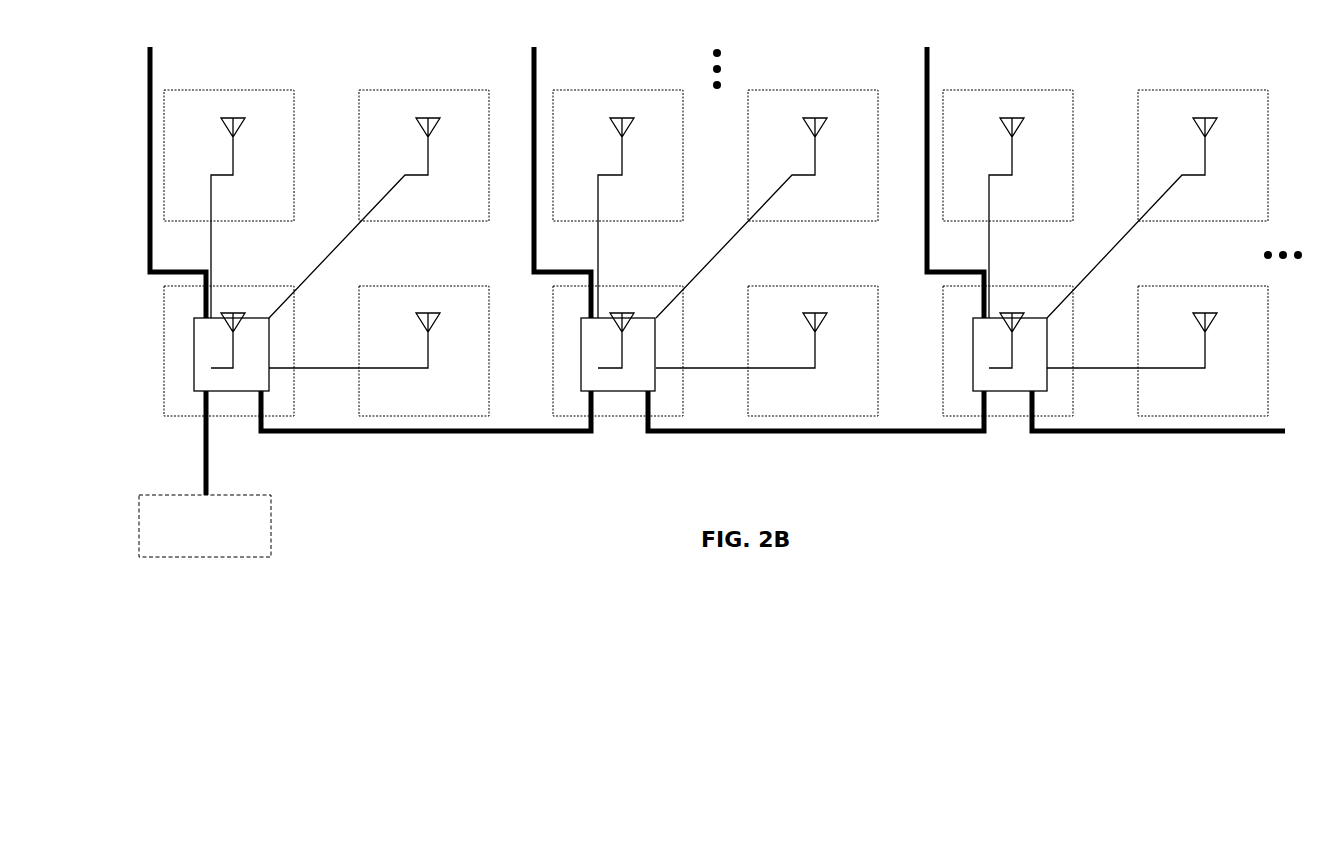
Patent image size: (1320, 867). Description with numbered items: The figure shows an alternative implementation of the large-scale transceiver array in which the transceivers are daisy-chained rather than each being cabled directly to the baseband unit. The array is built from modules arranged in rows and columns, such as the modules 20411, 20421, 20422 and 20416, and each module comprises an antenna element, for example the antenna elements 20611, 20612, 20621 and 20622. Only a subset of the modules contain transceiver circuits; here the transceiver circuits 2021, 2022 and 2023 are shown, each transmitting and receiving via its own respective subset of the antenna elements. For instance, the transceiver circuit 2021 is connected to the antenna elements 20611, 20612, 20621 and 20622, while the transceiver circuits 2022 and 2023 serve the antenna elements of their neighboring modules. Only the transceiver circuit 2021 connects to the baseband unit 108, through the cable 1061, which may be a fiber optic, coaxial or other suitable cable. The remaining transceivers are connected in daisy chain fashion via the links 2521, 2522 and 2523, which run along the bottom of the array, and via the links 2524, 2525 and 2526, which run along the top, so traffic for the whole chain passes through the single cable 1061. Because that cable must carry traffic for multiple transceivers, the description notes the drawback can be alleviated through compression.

The module 20421 is at (215, 90).
The antenna element 20621 is at (258, 111).
The module 20422 is at (389, 89).
The antenna element 20622 is at (441, 109).
The link 2524 is at (148, 158).
The link 2525 is at (531, 78).
The link 2526 is at (924, 78).
The module 20411 is at (164, 333).
The antenna element 20611 is at (252, 304).
The antenna element 20612 is at (441, 303).
The module 20416 is at (1174, 285).
The transceiver circuit 2021 is at (193, 391).
The transceiver circuit 2022 is at (580, 391).
The transceiver circuit 2023 is at (972, 391).
The cable 1061 is at (202, 456).
The baseband unit 108 is at (172, 495).
The link 2521 is at (495, 435).
The link 2522 is at (844, 435).
The link 2523 is at (1143, 435).